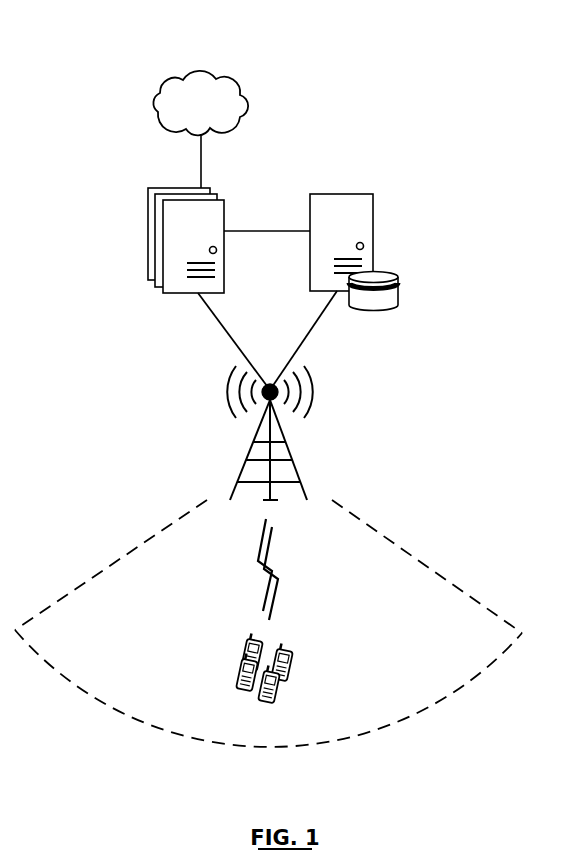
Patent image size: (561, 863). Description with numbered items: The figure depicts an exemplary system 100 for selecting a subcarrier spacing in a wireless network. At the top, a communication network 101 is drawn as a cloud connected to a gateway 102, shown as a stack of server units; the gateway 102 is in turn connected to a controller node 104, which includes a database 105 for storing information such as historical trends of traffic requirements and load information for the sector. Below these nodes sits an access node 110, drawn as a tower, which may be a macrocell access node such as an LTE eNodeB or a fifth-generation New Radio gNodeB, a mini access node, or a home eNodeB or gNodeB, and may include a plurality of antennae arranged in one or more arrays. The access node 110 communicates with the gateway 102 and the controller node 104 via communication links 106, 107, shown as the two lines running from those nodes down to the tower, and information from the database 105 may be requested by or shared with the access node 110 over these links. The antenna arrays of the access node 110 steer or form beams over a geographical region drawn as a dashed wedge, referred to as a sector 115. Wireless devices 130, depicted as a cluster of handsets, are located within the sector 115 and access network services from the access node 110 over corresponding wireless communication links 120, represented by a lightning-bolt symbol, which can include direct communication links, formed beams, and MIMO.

The system 100 is at (385, 50).
The communication network 101 is at (188, 112).
The gateway 102 is at (163, 187).
The controller node 104 is at (373, 193).
The database 105 is at (397, 276).
The communication link 106 is at (311, 331).
The communication link 107 is at (214, 321).
The access node 110 is at (248, 465).
The sector 115 is at (120, 559).
The wireless communication links 120 is at (281, 568).
The wireless devices 130 is at (234, 719).